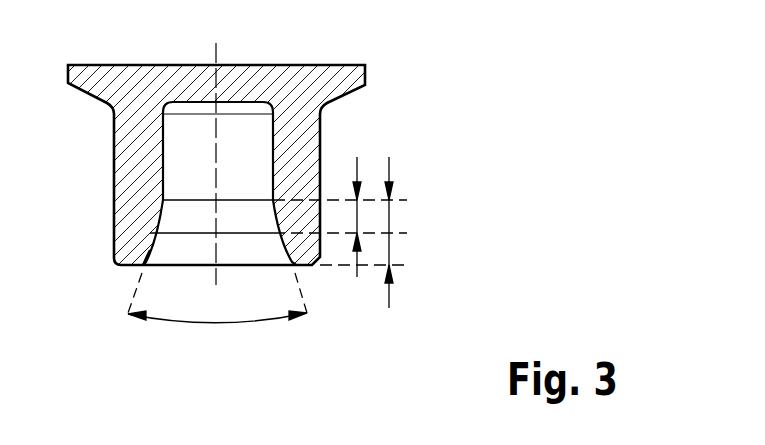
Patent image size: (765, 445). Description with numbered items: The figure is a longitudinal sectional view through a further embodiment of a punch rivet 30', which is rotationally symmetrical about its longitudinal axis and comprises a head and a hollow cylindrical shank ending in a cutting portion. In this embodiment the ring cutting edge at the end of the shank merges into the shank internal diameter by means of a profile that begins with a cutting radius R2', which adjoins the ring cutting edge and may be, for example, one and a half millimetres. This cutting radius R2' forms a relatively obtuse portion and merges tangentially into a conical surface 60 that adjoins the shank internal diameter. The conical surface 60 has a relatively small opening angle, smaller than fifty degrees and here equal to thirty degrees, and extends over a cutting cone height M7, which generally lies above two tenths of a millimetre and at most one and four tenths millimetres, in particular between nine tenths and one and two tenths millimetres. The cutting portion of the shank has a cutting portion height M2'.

The punch rivet 30' is at (320, 150).
The conical surface 60 is at (167, 219).
The cutting radius R2' is at (97, 198).
The cutting cone height M7 is at (358, 168).
The cutting portion height M2' is at (401, 232).